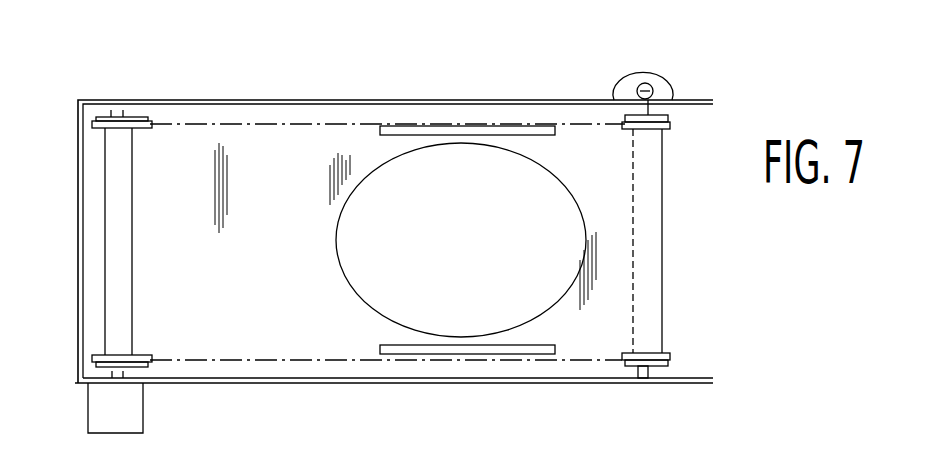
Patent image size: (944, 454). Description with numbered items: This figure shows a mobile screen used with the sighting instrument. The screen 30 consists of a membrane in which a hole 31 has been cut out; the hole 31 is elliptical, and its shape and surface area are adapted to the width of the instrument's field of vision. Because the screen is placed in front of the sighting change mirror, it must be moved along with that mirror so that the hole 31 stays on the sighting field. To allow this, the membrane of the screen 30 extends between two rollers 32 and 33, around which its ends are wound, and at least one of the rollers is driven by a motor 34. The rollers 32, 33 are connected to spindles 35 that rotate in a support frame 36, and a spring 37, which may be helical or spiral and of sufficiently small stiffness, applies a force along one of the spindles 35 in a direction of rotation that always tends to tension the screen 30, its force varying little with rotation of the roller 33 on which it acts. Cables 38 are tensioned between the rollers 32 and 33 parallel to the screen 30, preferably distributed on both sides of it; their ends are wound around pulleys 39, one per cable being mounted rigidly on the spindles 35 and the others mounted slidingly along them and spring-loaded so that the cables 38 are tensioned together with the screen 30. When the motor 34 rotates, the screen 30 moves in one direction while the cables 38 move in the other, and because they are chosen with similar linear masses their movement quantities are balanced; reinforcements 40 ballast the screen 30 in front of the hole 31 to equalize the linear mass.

The screen 30 is at (283, 237).
The hole 31 is at (336, 248).
The roller 32 is at (125, 152).
The roller 33 is at (648, 268).
The motor 34 is at (131, 402).
The spindle 35 is at (648, 372).
The support frame 36 is at (700, 100).
The spring 37 is at (648, 88).
The cable 38 is at (588, 124).
The pulley 39 is at (97, 128).
The reinforcement 40 is at (497, 126).